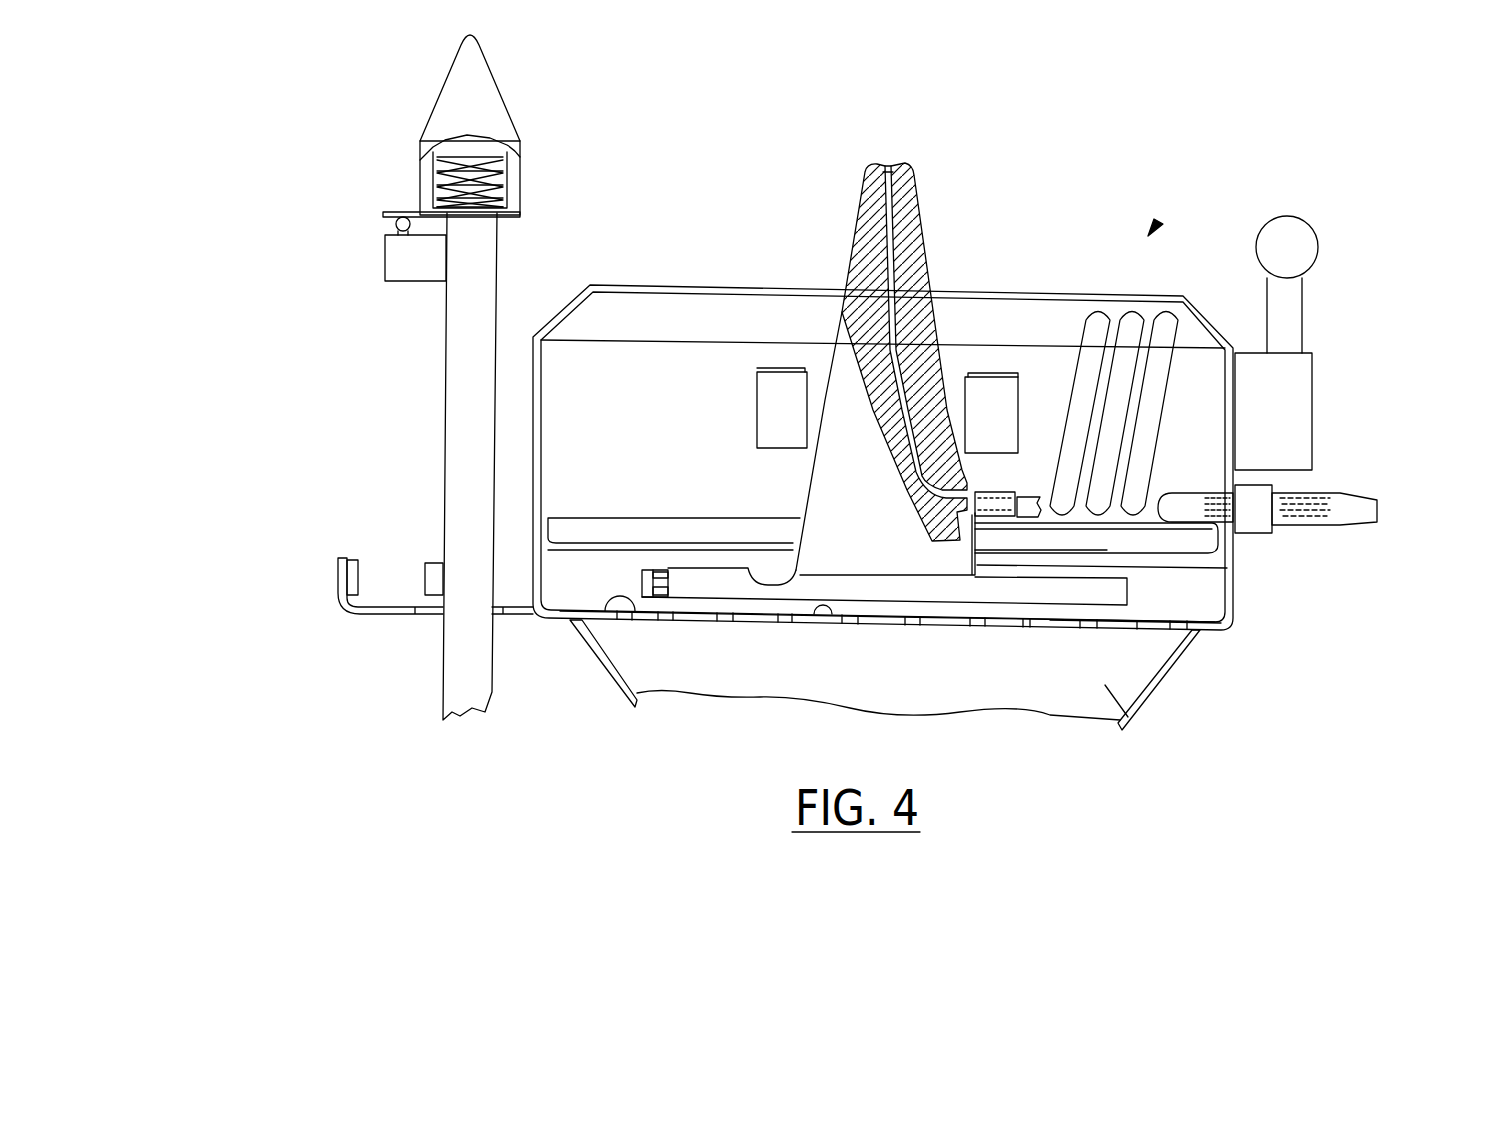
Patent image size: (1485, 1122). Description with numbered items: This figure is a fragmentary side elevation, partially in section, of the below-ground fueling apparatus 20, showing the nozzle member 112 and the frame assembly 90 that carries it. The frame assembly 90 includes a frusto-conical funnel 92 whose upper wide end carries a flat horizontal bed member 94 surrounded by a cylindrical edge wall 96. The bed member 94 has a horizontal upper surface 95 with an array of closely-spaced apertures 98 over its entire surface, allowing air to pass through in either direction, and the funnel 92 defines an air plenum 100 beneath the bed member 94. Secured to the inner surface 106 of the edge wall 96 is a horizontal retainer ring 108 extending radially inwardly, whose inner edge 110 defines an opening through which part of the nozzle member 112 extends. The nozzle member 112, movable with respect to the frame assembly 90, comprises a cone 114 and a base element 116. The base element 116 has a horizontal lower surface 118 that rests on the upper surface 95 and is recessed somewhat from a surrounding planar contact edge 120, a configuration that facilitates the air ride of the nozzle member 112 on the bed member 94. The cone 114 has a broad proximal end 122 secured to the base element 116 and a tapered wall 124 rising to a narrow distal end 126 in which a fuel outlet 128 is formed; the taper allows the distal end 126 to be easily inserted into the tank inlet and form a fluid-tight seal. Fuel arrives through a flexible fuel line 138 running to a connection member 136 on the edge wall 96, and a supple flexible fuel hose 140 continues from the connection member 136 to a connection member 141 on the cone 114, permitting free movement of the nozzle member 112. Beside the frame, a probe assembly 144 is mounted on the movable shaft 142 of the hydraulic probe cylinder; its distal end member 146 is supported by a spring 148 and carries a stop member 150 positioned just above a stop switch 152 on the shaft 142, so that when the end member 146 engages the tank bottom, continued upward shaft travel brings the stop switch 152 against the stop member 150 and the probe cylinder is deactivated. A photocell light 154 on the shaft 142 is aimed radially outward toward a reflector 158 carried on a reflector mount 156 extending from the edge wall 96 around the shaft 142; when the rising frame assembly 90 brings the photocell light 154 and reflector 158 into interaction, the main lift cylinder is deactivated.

The below-ground fueling apparatus 20 is at (1156, 224).
The frame assembly 90 is at (1050, 548).
The frusto-conical funnel 92 is at (1152, 697).
The bed member 94 is at (690, 618).
The upper surface 95 is at (588, 618).
The cylindrical edge wall 96 is at (533, 432).
The apertures 98 is at (962, 625).
The air plenum 100 is at (1130, 718).
The inner surface 106 is at (543, 405).
The retainer ring 108 is at (592, 540).
The inner edge 110 is at (680, 548).
The nozzle member 112 is at (913, 227).
The cone 114 is at (918, 322).
The base element 116 is at (750, 598).
The lower surface 118 is at (1123, 608).
The planar contact edge 120 is at (1053, 607).
The proximal end 122 is at (1045, 558).
The tapered wall 124 is at (830, 360).
The distal end 126 is at (905, 168).
The fuel outlet 128 is at (885, 163).
The connection member 136 is at (1258, 492).
The flexible fuel line 138 is at (1340, 508).
The flexible fuel hose 140 is at (1097, 328).
The connection member 141 is at (1025, 490).
The movable shaft 142 is at (457, 466).
The probe assembly 144 is at (423, 172).
The distal end member 146 is at (452, 101).
The spring 148 is at (447, 183).
The stop member 150 is at (388, 212).
The stop switch 152 is at (395, 222).
The photocell light 154 is at (425, 568).
The reflector mount 156 is at (338, 607).
The reflector 158 is at (356, 561).